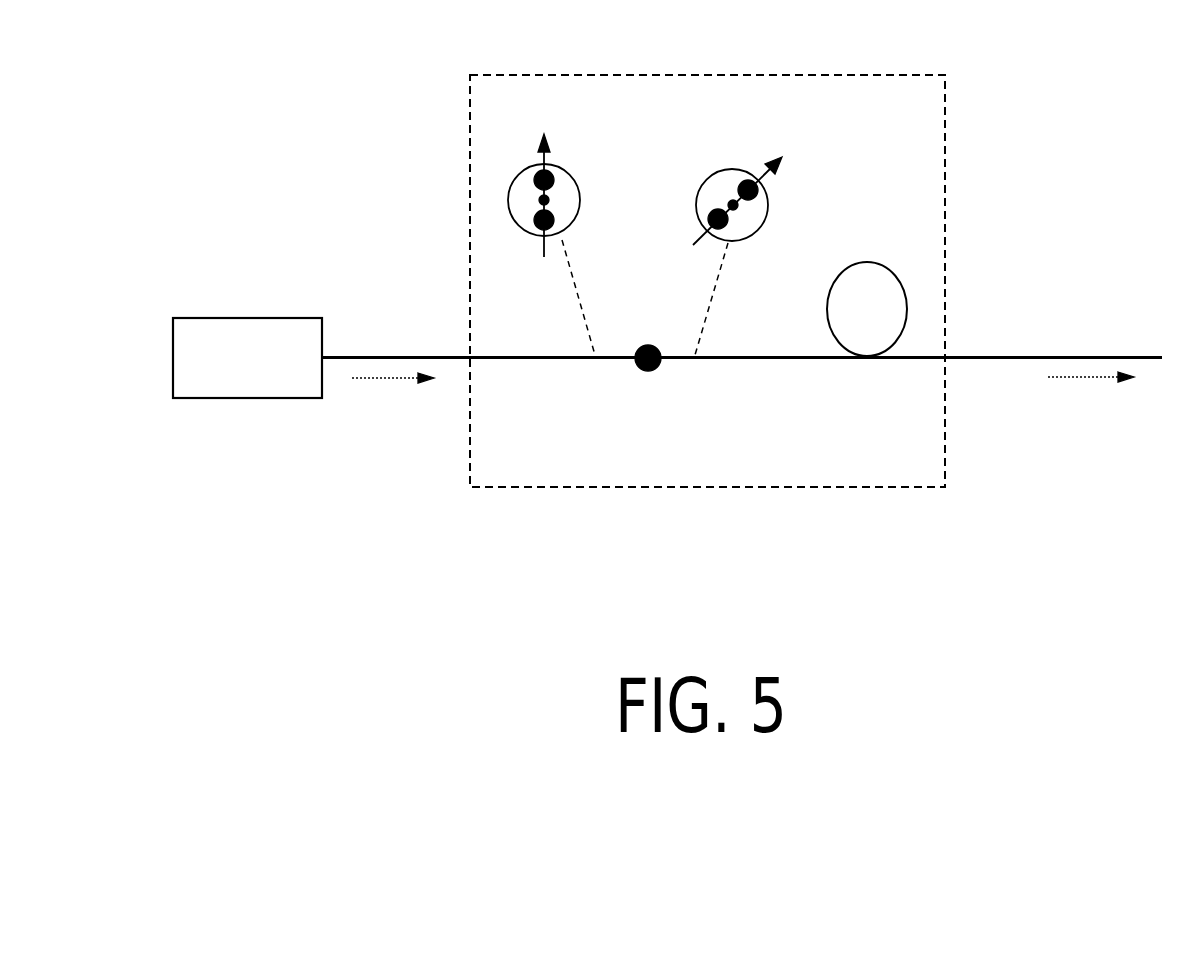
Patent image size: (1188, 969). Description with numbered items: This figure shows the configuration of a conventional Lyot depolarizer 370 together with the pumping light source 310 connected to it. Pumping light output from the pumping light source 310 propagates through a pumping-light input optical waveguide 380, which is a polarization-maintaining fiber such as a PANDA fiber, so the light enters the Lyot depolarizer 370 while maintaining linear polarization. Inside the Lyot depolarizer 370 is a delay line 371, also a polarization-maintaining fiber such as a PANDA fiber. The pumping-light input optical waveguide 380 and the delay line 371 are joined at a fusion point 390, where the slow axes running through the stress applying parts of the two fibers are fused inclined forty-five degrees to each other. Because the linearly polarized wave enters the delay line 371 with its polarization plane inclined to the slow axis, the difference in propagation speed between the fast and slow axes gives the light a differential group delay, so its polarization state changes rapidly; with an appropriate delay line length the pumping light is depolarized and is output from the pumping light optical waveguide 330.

The pumping light source 310 is at (232, 318).
The pumping-light input optical waveguide 380 is at (400, 355).
The Lyot depolarizer 370 is at (874, 74).
The delay line 371 is at (867, 262).
The fusion point 390 is at (648, 372).
The pumping light optical waveguide 330 is at (1040, 355).